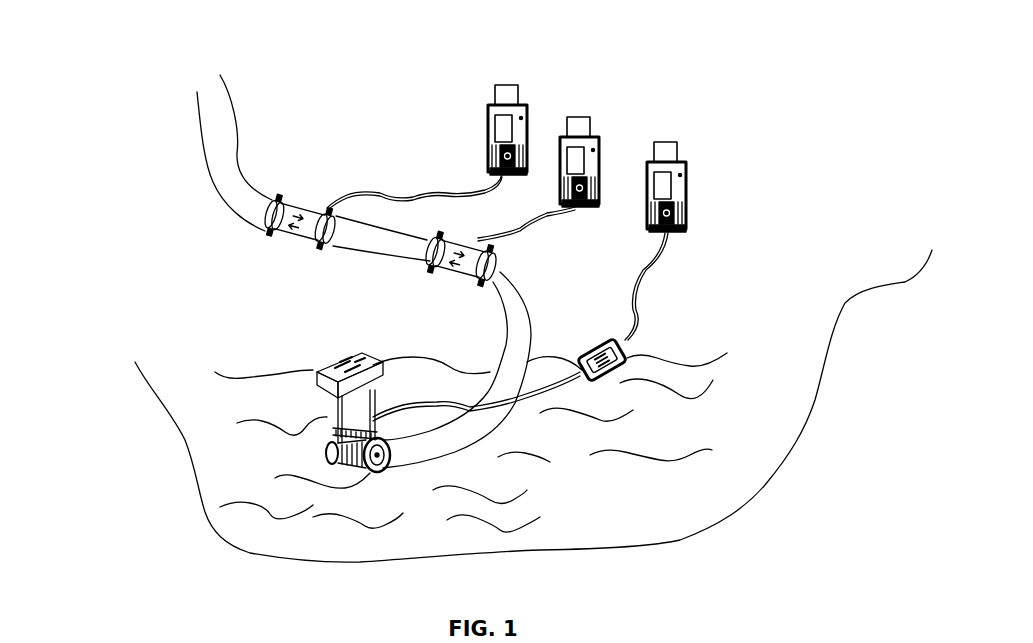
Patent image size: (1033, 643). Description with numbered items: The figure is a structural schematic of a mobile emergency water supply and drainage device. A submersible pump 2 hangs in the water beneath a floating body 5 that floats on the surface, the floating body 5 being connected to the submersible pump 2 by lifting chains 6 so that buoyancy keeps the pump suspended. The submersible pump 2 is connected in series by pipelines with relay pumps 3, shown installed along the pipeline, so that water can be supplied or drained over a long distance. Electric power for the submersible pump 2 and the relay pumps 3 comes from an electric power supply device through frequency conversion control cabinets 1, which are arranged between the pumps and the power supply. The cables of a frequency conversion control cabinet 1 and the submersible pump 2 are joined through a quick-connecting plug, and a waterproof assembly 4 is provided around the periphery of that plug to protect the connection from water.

The frequency conversion control cabinet 1 is at (663, 153).
The submersible pump 2 is at (330, 460).
The relay pump 3 is at (480, 265).
The waterproof assembly 4 is at (623, 347).
The floating body 5 is at (313, 368).
The lifting chain 6 is at (337, 419).